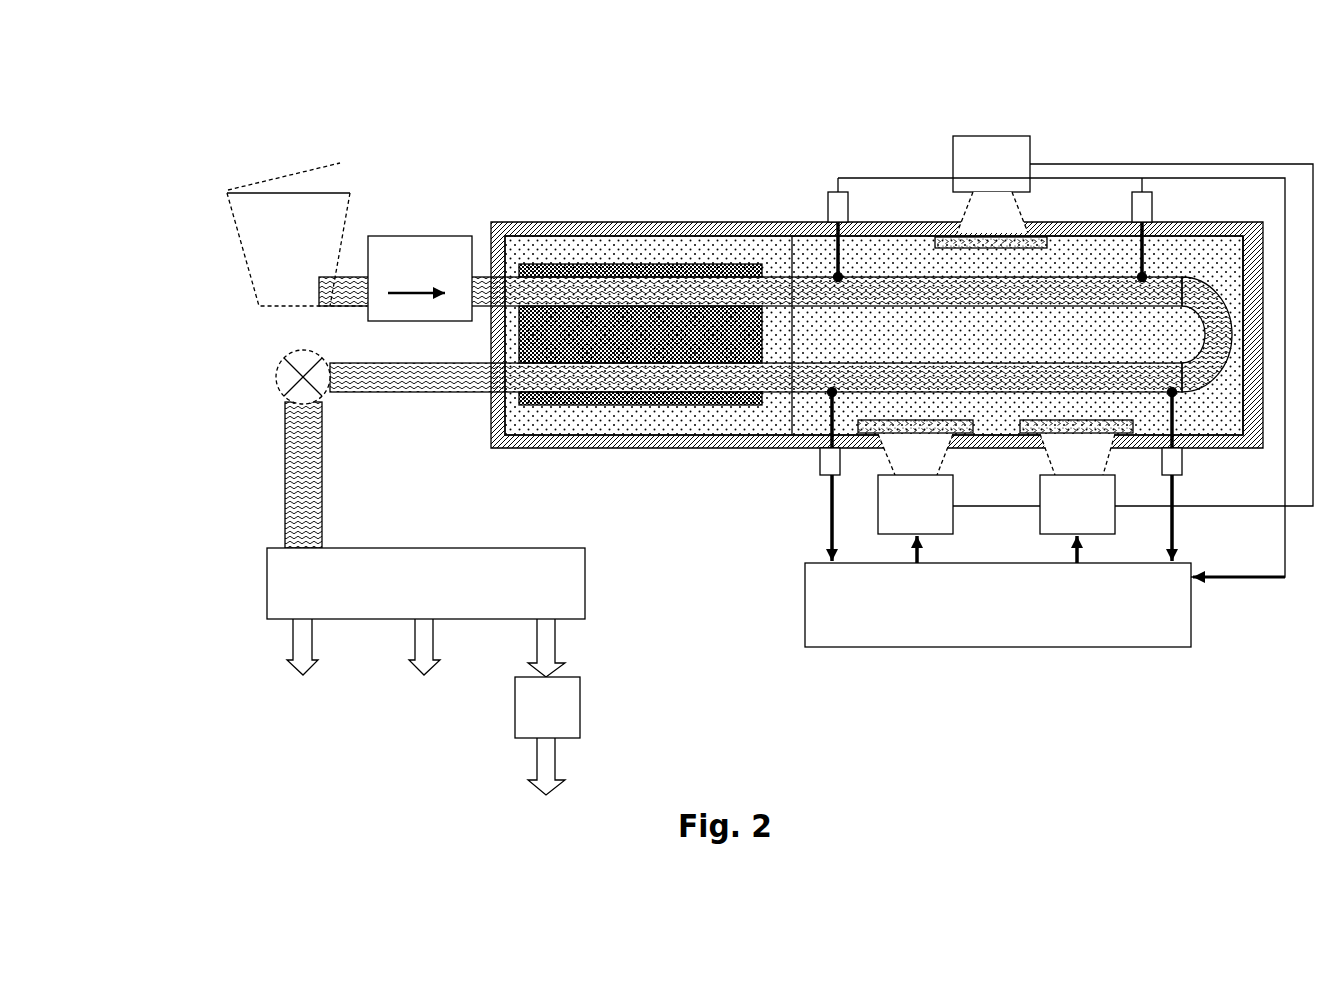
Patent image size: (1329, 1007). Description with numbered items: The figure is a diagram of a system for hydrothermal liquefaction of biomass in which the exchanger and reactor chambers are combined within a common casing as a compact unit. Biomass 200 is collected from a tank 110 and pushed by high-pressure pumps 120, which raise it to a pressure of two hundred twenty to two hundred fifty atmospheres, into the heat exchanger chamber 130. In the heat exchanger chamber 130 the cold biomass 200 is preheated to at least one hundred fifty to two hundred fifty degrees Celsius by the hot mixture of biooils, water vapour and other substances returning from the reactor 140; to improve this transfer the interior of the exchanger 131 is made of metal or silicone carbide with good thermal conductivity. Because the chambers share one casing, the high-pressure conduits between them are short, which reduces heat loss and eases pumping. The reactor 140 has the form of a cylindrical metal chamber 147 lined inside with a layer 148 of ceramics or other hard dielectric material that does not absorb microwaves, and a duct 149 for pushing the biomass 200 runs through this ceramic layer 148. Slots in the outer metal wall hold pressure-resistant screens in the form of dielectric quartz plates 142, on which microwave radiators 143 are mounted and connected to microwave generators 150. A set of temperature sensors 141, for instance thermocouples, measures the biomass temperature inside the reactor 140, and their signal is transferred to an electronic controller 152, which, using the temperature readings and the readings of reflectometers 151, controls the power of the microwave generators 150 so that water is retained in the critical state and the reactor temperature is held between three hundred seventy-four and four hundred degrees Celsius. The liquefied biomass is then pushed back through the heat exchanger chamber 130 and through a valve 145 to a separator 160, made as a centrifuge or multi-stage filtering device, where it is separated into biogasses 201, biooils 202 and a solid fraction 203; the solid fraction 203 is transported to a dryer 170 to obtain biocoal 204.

The tank 110 is at (257, 217).
The biomass 200 is at (355, 290).
The high-pressure pumps 120 is at (445, 252).
The heat exchanger chamber 130 is at (852, 260).
The interior of the exchanger 131 is at (638, 265).
The reactor 140 is at (820, 220).
The temperature sensors 141 is at (823, 458).
The dielectric quartz plates 142 is at (890, 425).
The microwave radiators 143 is at (917, 460).
The valve 145 is at (282, 375).
The cylindrical metal chamber 147 is at (1255, 250).
The ceramic layer 148 is at (1183, 248).
The duct 149 is at (1118, 272).
The microwave generators 150 is at (895, 607).
The reflectometers 151 is at (917, 478).
The electronic controller 152 is at (1172, 617).
The separator 160 is at (290, 577).
The dryer 170 is at (523, 737).
The biogasses 201 is at (287, 662).
The biooils 202 is at (410, 662).
The solid fraction 203 is at (527, 662).
The biocoal 204 is at (533, 788).